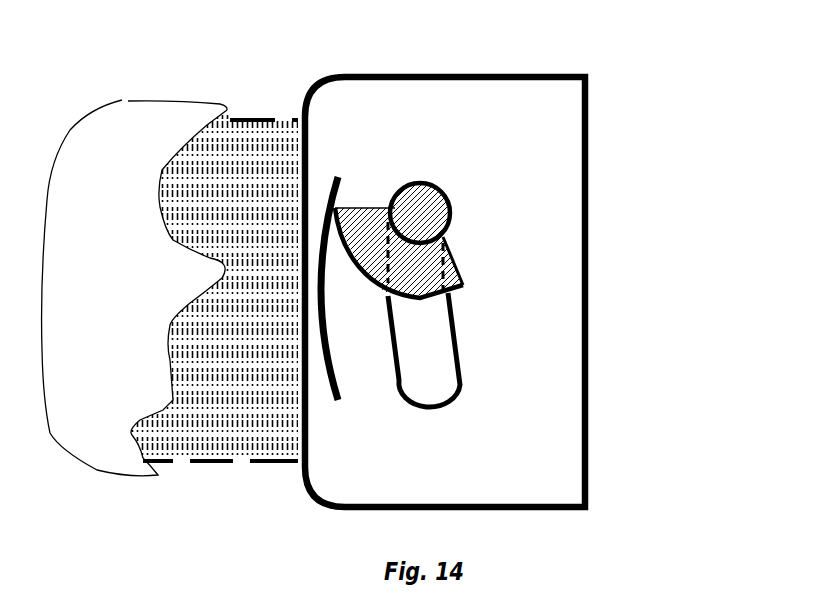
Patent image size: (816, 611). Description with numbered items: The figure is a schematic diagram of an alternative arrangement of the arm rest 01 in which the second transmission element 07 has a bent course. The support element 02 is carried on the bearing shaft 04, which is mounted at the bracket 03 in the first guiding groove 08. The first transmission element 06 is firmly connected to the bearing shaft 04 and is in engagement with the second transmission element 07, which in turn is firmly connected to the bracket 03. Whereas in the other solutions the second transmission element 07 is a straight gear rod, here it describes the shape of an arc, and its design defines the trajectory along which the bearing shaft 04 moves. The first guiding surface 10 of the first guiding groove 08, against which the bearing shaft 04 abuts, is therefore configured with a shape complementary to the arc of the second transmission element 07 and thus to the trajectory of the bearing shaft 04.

The arm rest 01 is at (172, 30).
The support element 02 is at (197, 353).
The bracket 03 is at (545, 283).
The bearing shaft 04 is at (422, 197).
The first transmission element 06 is at (385, 232).
The second transmission element 07 is at (320, 257).
The first guiding groove 08 is at (418, 375).
The first guiding surface 10 is at (453, 360).